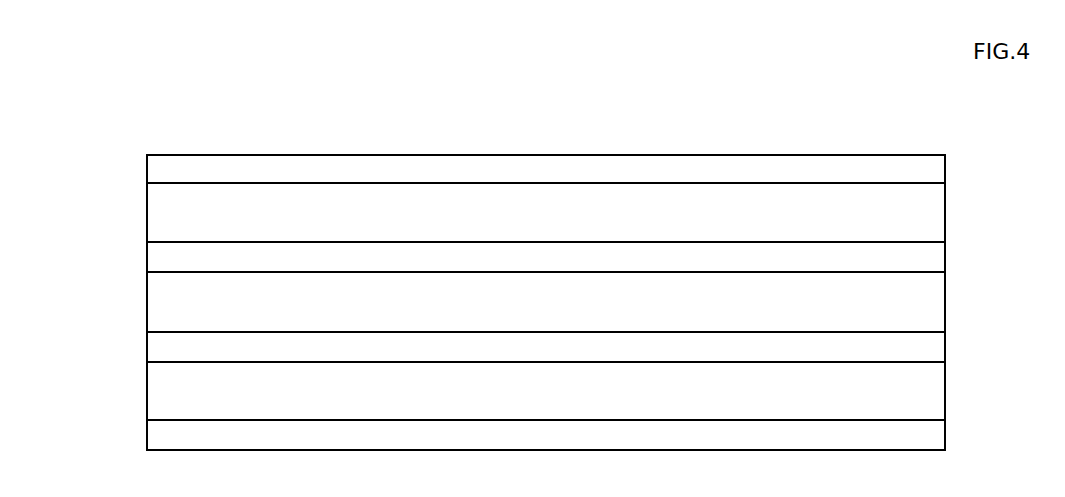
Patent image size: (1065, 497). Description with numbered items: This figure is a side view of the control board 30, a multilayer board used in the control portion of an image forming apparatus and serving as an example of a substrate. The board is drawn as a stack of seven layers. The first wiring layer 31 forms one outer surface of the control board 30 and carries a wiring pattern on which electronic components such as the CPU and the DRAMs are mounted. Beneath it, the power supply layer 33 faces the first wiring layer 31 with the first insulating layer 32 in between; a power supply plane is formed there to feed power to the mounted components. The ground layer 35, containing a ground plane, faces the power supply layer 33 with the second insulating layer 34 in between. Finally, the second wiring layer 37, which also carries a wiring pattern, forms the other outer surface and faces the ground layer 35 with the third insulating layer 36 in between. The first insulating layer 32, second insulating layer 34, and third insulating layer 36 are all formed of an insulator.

The control board 30 is at (128, 94).
The first wiring layer 31 is at (147, 165).
The first insulating layer 32 is at (945, 212).
The power supply layer 33 is at (147, 256).
The second insulating layer 34 is at (945, 300).
The ground layer 35 is at (147, 344).
The third insulating layer 36 is at (945, 389).
The second wiring layer 37 is at (147, 434).